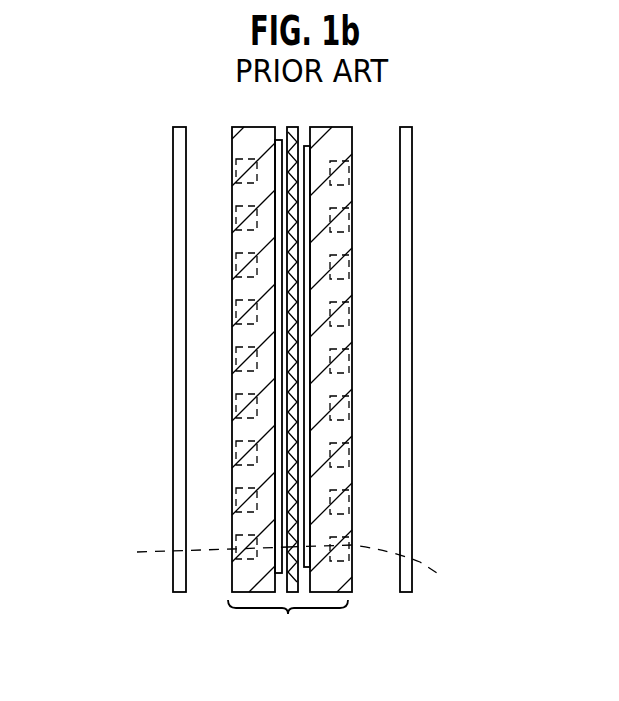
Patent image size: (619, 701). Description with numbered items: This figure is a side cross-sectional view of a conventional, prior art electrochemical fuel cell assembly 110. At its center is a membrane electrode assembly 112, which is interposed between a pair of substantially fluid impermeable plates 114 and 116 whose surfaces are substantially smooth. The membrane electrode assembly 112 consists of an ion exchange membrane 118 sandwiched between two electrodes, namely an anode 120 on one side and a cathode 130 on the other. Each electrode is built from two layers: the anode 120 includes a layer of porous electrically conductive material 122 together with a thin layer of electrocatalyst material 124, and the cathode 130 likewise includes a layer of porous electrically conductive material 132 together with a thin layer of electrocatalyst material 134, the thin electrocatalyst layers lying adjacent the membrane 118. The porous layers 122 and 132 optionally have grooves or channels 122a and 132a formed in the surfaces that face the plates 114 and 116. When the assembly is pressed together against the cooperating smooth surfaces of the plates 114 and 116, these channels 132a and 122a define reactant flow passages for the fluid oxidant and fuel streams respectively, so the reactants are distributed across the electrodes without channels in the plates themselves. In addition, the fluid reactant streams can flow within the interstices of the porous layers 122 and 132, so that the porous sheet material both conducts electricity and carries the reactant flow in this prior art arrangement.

The electrochemical fuel cell assembly 110 is at (440, 172).
The membrane electrode assembly 112 is at (288, 625).
The plate 114 is at (180, 280).
The plate 116 is at (407, 293).
The ion exchange membrane 118 is at (292, 128).
The anode 120 is at (333, 128).
The layer of porous electrically conductive material 122 is at (340, 578).
The channels 122a is at (388, 569).
The layer of electrocatalyst material 124 is at (310, 172).
The cathode 130 is at (263, 127).
The layer of porous electrically conductive material 132 is at (252, 580).
The channels 132a is at (184, 552).
The layer of electrocatalyst material 134 is at (275, 157).